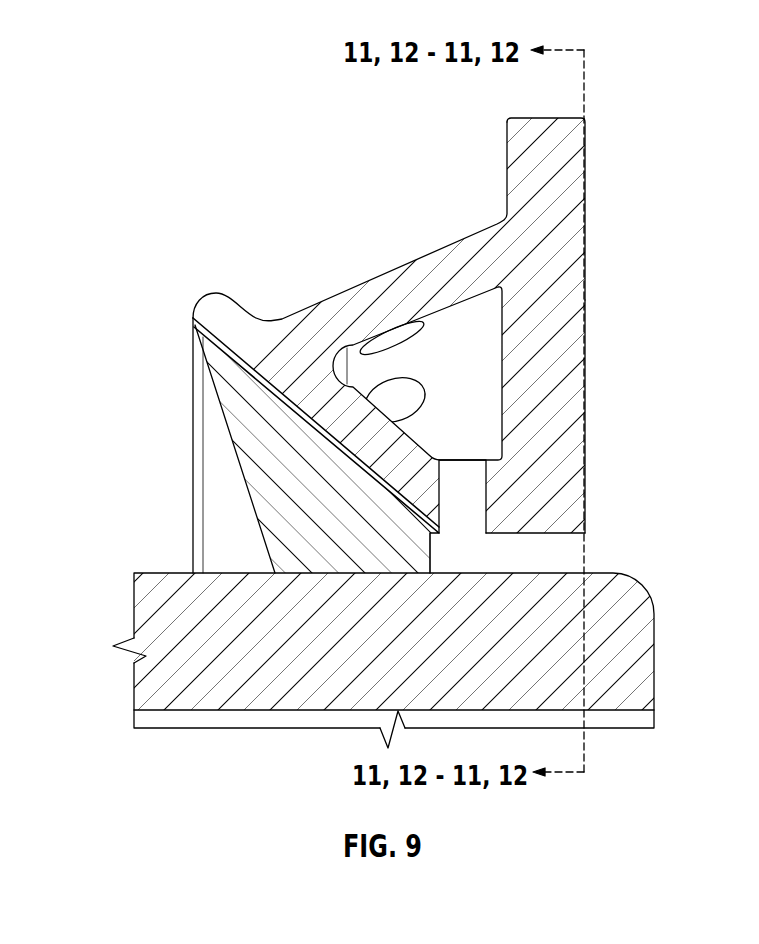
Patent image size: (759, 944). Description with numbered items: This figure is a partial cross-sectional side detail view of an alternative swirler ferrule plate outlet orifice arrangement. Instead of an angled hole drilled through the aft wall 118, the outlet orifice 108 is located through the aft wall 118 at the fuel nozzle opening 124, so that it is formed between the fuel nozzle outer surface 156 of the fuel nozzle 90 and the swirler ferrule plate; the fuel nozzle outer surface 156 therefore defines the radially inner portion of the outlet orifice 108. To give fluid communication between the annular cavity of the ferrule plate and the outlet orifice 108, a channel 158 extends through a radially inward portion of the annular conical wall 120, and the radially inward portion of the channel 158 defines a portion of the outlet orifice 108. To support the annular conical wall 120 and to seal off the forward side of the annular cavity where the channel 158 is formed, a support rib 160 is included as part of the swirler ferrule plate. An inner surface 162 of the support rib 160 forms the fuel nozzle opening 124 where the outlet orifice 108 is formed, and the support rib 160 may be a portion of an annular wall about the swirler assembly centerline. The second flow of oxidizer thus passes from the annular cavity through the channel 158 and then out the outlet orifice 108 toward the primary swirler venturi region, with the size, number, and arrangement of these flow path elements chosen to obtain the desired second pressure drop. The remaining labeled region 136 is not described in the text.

The fuel nozzle 90 is at (340, 700).
The outlet orifice 108 is at (558, 557).
The aft wall 118 is at (531, 118).
The annular conical wall 120 is at (247, 328).
The fuel nozzle opening 124 is at (543, 580).
The side wall 136 is at (558, 315).
The fuel nozzle outer surface 156 is at (160, 562).
The channel 158 is at (463, 523).
The support rib 160 is at (233, 387).
The inner surface 162 is at (334, 580).